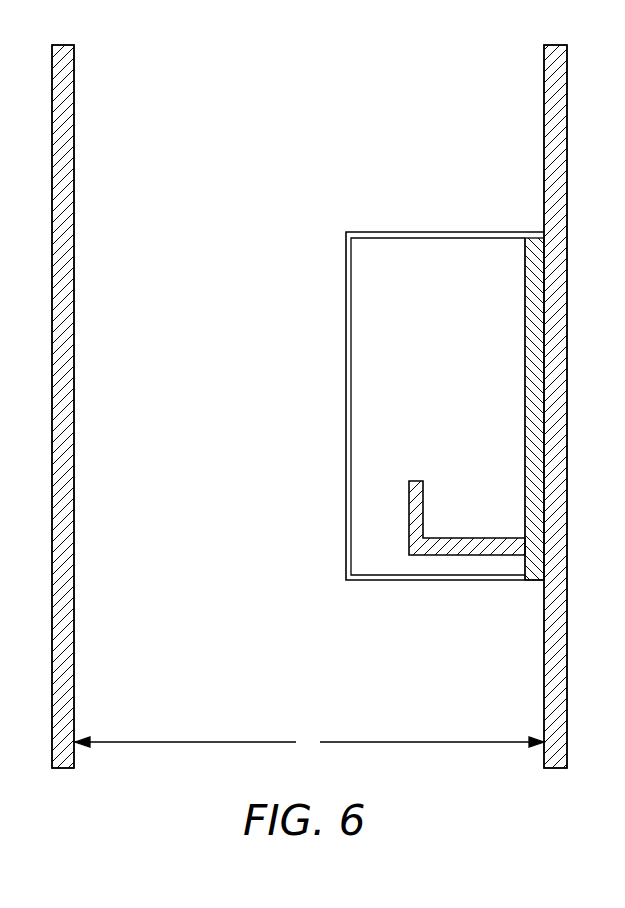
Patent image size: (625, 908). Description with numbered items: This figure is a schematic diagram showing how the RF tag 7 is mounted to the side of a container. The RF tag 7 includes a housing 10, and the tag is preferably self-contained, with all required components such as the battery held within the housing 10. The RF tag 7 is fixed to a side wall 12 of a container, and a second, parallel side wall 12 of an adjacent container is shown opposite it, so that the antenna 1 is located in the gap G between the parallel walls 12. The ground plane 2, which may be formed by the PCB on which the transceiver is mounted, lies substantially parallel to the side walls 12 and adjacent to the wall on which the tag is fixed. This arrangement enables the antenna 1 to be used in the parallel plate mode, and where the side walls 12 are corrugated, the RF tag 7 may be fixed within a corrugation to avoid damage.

The side wall 12 is at (75, 87).
The housing 10 is at (451, 232).
The ground plane 2 is at (525, 378).
The antenna 1 is at (423, 497).
The RF tag 7 is at (322, 369).
The gap G is at (309, 743).